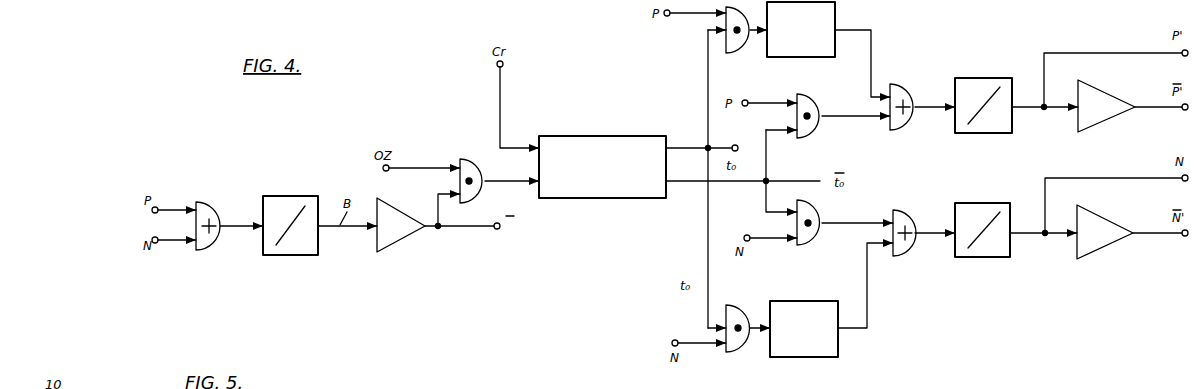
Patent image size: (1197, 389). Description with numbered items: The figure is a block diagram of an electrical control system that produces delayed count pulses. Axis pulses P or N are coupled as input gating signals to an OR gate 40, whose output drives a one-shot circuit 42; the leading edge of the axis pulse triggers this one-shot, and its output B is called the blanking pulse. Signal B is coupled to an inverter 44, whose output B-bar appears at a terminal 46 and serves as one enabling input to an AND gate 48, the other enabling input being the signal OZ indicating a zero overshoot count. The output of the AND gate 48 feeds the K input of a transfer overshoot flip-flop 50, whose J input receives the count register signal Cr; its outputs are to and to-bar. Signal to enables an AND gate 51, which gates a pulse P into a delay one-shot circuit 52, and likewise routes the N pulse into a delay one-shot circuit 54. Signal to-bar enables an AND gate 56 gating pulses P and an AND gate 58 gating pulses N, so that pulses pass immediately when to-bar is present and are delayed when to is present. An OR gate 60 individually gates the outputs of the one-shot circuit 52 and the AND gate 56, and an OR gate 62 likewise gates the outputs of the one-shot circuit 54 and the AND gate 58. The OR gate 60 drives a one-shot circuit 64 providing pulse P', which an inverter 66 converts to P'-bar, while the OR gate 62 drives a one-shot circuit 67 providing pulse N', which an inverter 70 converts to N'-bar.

The OR gate 40 is at (216, 200).
The one-shot circuit 42 is at (286, 197).
The inverter 44 is at (408, 232).
The terminal 46 is at (492, 232).
The AND gate 48 is at (471, 160).
The transfer overshoot flip-flop 50 is at (650, 140).
The AND gate 51 is at (740, 45).
The delay one-shot circuit 52 is at (836, 15).
The delay one-shot circuit 54 is at (806, 357).
The AND gate 56 is at (812, 95).
The AND gate 58 is at (812, 212).
The OR gate 60 is at (900, 85).
The OR gate 62 is at (902, 212).
The one-shot circuit 64 is at (985, 78).
The inverter 66 is at (1115, 112).
The one-shot circuit 67 is at (1005, 192).
The inverter 70 is at (1112, 240).